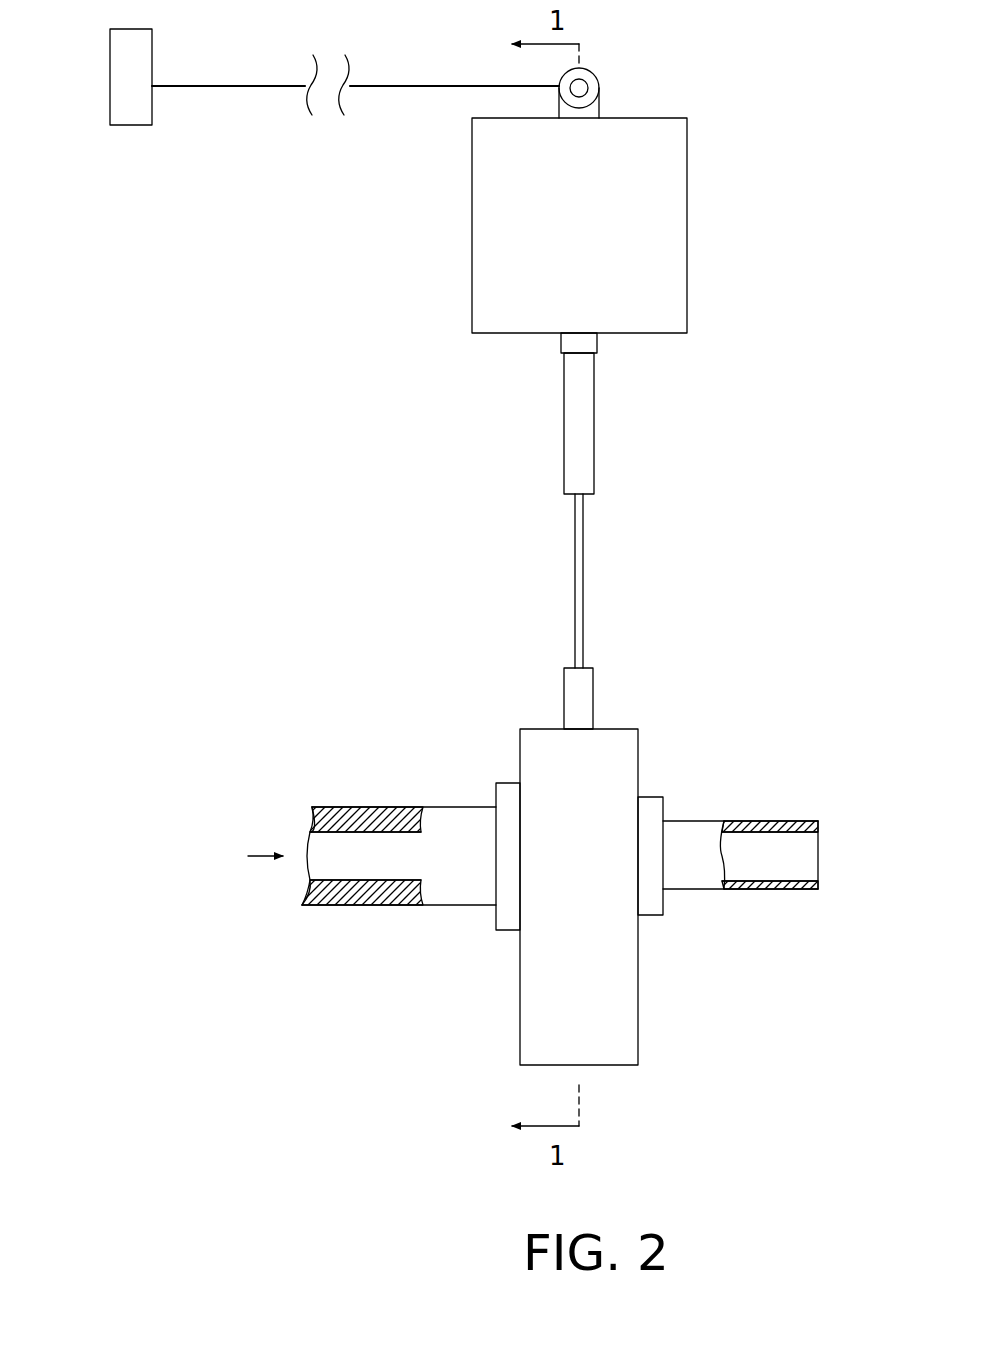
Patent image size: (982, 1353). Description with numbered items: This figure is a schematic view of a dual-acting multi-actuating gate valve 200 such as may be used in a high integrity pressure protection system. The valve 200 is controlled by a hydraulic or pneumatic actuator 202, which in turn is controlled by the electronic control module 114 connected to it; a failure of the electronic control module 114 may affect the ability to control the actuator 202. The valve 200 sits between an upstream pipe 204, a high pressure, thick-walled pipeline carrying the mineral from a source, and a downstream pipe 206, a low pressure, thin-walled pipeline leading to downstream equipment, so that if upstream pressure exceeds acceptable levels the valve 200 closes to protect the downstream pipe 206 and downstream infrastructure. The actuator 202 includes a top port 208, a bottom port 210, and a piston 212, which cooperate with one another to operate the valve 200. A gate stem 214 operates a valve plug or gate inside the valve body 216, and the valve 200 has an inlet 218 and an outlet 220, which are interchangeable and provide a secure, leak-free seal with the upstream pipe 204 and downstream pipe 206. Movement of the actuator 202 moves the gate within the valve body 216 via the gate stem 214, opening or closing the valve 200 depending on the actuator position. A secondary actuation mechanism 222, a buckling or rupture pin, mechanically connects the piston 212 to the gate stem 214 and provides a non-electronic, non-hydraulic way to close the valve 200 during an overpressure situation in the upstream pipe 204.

The electronic control module 114 is at (110, 52).
The dual-acting multi-actuating gate valve 200 is at (585, 859).
The actuator 202 is at (687, 225).
The upstream pipe 204 is at (338, 905).
The downstream pipe 206 is at (783, 889).
The top port 208 is at (593, 72).
The bottom port 210 is at (597, 342).
The piston 212 is at (564, 452).
The gate stem 214 is at (564, 700).
The valve body 216 is at (615, 728).
The inlet 218 is at (496, 915).
The outlet 220 is at (663, 900).
The secondary actuation mechanism 222 is at (575, 583).